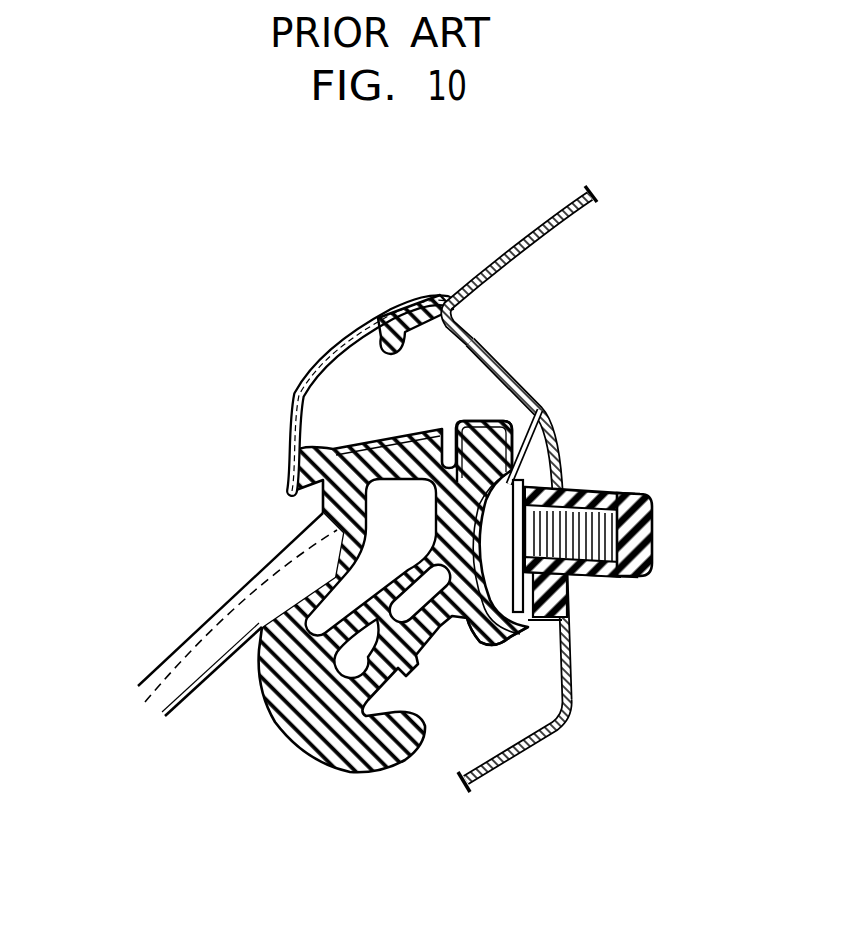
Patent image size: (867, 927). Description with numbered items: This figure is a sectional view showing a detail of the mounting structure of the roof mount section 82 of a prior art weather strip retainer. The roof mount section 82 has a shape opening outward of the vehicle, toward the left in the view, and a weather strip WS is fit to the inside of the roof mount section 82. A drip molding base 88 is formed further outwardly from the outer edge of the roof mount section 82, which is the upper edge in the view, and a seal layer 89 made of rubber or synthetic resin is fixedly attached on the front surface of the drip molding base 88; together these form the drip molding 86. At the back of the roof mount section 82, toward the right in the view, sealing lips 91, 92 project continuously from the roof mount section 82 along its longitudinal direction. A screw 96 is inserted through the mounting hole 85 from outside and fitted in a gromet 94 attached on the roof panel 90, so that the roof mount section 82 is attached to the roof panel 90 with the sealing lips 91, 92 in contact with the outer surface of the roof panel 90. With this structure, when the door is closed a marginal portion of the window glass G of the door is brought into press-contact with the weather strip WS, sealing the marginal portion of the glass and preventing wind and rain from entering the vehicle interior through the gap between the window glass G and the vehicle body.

The roof mount section 82 is at (484, 418).
The mounting hole 85 is at (560, 485).
The drip molding 86 is at (336, 276).
The drip molding base 88 is at (296, 380).
The seal layer 89 is at (331, 351).
The roof panel 90 is at (492, 270).
The sealing lip 91 is at (538, 414).
The sealing lip 92 is at (572, 645).
The gromet 94 is at (594, 499).
The screw 96 is at (509, 645).
The window glass G is at (233, 598).
The weather strip WS is at (316, 718).